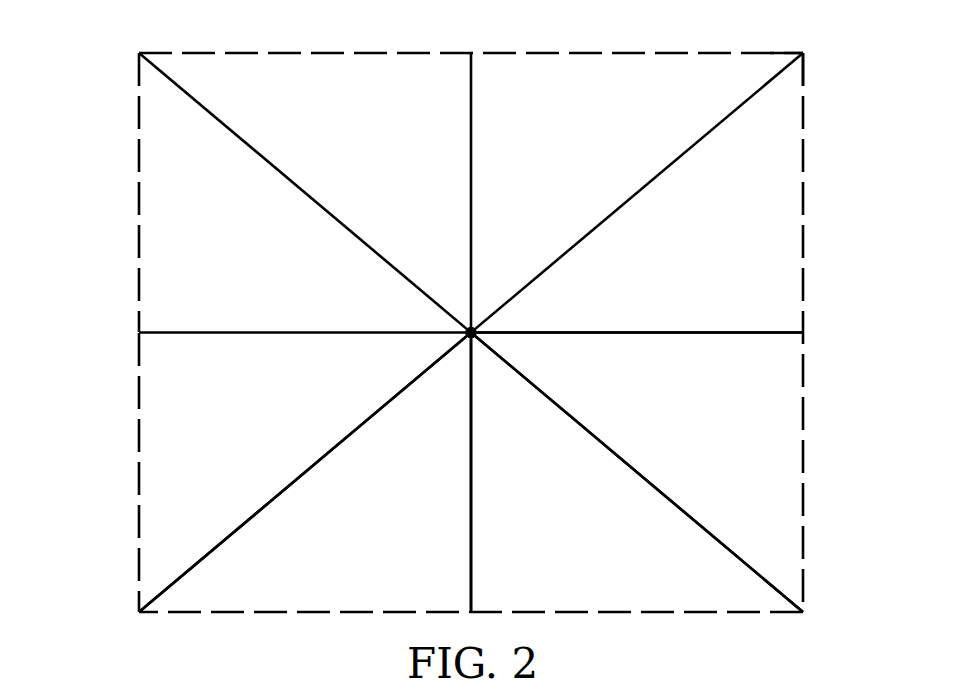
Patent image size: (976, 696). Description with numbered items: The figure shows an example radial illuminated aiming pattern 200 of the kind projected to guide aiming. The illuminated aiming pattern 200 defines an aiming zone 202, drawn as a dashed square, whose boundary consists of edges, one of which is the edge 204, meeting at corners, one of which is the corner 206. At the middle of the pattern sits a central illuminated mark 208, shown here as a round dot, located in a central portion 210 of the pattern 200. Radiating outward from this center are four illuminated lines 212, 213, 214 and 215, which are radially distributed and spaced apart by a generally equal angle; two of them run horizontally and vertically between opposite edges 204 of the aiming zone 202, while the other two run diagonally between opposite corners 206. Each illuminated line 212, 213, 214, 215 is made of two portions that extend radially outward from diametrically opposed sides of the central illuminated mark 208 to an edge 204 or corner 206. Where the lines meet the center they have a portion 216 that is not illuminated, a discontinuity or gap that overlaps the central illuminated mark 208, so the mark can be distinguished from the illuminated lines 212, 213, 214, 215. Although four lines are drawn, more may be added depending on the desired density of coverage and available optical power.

The illuminated aiming pattern 200 is at (128, 42).
The aiming zone 202 is at (139, 194).
The edge 204 is at (139, 476).
The corner 206 is at (803, 53).
The central illuminated mark 208 is at (477, 337).
The central portion 210 is at (479, 338).
The illuminated line 212 is at (750, 332).
The illuminated line 213 is at (470, 565).
The illuminated line 214 is at (301, 475).
The illuminated line 215 is at (640, 475).
The portion that is not illuminated 216 is at (477, 325).